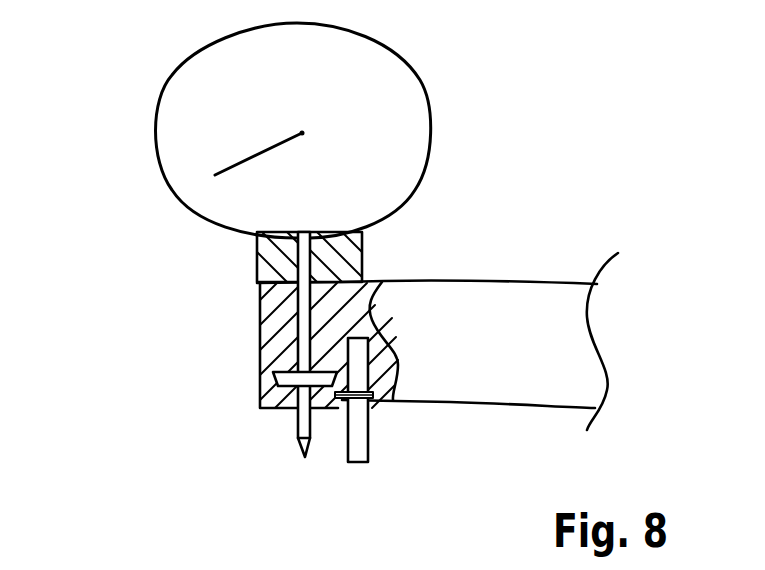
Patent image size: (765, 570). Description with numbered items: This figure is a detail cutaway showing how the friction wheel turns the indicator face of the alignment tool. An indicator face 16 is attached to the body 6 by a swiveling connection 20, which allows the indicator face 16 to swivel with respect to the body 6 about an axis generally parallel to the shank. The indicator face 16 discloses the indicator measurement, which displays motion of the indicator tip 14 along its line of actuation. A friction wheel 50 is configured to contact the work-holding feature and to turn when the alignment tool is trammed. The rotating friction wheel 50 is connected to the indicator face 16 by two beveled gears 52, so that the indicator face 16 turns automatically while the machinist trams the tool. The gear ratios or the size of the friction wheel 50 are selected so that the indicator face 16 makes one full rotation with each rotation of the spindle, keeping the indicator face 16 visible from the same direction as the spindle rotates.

The body 6 is at (494, 320).
The indicator tip 14 is at (307, 455).
The indicator face 16 is at (188, 125).
The swiveling connection 20 is at (257, 252).
The friction wheel 50 is at (355, 430).
The beveled gears 52 is at (270, 373).